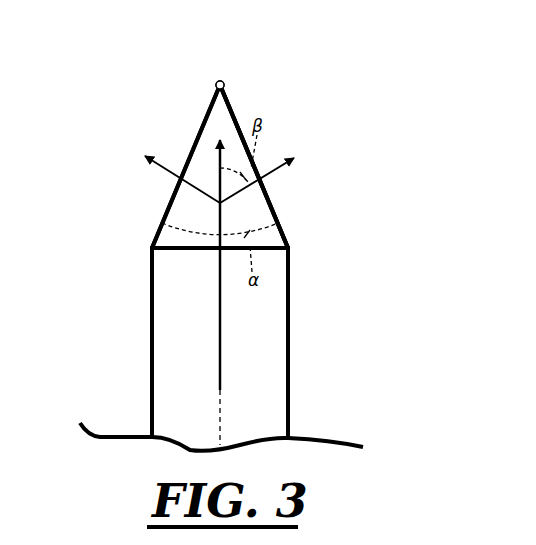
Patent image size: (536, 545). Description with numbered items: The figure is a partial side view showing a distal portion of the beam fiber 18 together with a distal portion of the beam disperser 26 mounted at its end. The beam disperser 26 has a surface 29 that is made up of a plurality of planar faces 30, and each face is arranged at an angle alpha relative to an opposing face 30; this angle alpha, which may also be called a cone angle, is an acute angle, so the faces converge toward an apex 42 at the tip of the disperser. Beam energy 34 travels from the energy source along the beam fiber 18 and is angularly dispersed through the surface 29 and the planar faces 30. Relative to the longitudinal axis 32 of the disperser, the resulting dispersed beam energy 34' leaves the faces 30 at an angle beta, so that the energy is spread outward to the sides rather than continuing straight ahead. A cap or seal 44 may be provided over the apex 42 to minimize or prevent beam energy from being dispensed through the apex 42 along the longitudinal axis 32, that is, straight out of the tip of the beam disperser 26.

The beam fiber 18 is at (250, 345).
The beam disperser 26 is at (175, 110).
The surface 29 is at (286, 217).
The planar faces 30 is at (158, 226).
The longitudinal axis 32 is at (225, 410).
The beam energy 34 is at (161, 292).
The dispersed beam energy 34' is at (244, 162).
The apex 42 is at (226, 88).
The cap or seal 44 is at (217, 82).